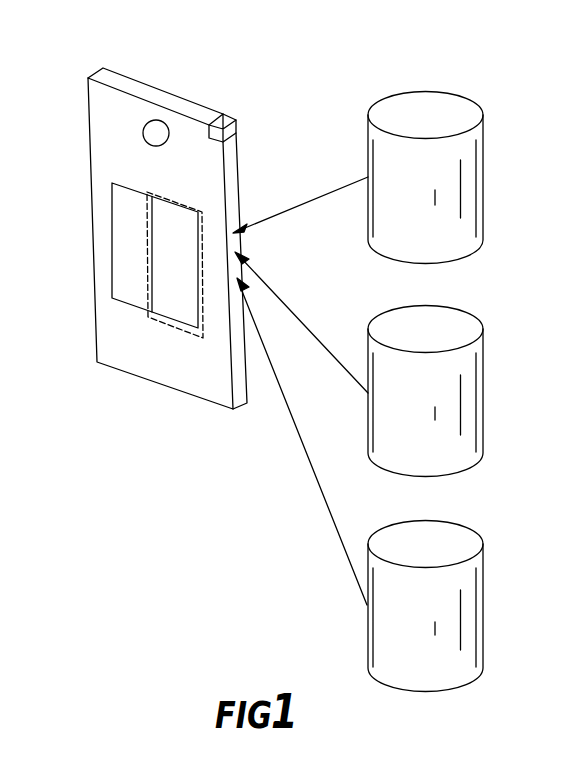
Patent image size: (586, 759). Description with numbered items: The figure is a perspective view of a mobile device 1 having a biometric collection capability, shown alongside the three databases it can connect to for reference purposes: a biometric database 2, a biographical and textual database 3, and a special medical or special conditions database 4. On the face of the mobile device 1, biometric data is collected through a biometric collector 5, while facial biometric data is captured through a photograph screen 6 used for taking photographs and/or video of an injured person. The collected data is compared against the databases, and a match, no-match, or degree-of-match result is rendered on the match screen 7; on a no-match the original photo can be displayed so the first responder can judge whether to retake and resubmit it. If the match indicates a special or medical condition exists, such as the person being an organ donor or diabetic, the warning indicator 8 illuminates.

The mobile device 1 is at (103, 75).
The biometric database 2 is at (470, 168).
The biographical and textual database 3 is at (470, 383).
The special medical or special conditions database 4 is at (470, 598).
The biometric collector 5 is at (154, 128).
The photograph screen 6 is at (120, 228).
The match screen 7 is at (177, 290).
The warning indicator 8 is at (195, 335).